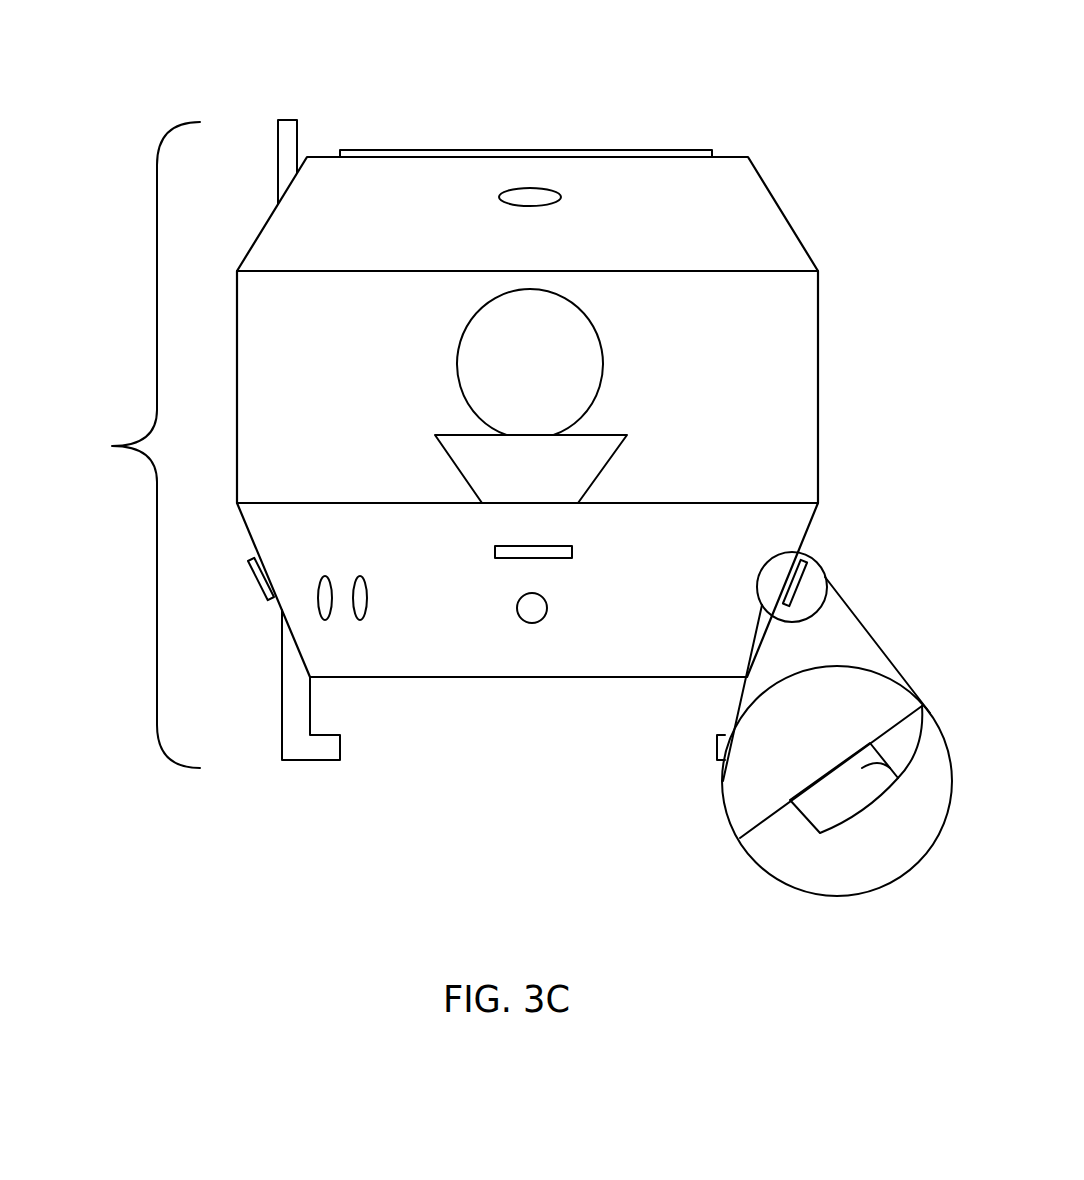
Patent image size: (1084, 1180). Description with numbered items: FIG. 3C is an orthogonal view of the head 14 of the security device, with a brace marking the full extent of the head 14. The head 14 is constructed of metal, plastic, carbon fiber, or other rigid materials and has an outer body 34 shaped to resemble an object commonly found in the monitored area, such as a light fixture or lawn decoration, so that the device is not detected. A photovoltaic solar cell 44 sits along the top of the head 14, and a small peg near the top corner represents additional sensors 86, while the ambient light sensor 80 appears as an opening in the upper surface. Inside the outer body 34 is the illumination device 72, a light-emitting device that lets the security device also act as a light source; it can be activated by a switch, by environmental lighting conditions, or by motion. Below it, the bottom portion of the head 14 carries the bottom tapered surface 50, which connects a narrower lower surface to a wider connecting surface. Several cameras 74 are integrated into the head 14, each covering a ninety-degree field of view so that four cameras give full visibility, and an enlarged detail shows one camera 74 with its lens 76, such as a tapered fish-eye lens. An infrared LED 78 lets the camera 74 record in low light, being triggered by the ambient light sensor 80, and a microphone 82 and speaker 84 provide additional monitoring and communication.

The head 14 is at (121, 445).
The outer body 34 is at (816, 270).
The photovoltaic solar cell 44 is at (638, 150).
The bottom tapered surface 50 is at (745, 770).
The illumination device 72 is at (560, 427).
The camera 74 is at (252, 583).
The lens 76 is at (848, 813).
The infrared LED 78 is at (523, 550).
The ambient light sensor 80 is at (532, 193).
The microphone 82 is at (318, 598).
The speaker 84 is at (362, 616).
The additional sensors 86 is at (287, 120).